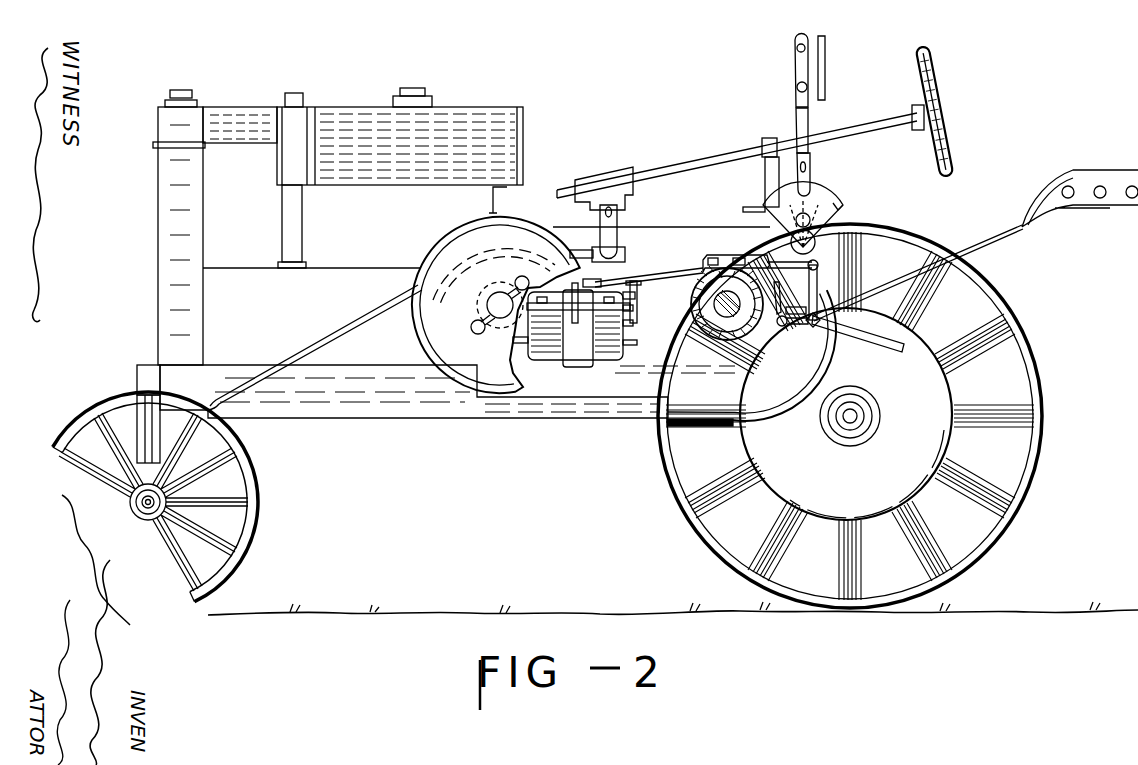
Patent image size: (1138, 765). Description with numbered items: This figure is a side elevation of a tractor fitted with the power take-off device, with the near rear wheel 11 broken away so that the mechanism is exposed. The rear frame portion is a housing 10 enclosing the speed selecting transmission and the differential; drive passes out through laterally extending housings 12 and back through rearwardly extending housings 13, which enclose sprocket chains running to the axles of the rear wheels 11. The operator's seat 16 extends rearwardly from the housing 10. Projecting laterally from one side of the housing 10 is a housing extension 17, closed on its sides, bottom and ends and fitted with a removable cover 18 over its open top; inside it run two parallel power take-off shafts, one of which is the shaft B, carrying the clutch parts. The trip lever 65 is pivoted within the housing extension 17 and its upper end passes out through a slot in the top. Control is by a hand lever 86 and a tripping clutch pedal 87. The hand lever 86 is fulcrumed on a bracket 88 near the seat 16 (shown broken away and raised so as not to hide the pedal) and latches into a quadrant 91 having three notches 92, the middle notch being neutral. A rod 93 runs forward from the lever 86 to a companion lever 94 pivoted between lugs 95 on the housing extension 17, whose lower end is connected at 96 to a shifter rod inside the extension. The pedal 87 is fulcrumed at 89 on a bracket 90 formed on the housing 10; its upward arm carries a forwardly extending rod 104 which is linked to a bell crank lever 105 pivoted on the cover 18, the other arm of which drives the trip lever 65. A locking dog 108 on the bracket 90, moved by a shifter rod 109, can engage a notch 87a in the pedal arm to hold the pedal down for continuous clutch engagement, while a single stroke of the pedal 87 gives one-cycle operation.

The frame housing 10 is at (623, 397).
The rear wheels 11 is at (1025, 488).
The laterally extending housings 12 is at (717, 342).
The rearwardly extending housings 13 is at (846, 414).
The operator's seat 16 is at (1088, 178).
The housing extension 17 is at (548, 360).
The removable cover 18 is at (584, 296).
The trip lever 65 is at (515, 340).
The hand lever 86 is at (793, 50).
The tripping clutch pedal 87 is at (887, 350).
The notch 87a is at (790, 307).
The bracket 88 is at (782, 233).
The pedal fulcrum 89 is at (807, 327).
The bracket 90 is at (792, 323).
The latching quadrant 91 is at (828, 213).
The notches 92 is at (828, 200).
The operating rod 93 is at (645, 280).
The companion lever 94 is at (640, 297).
The lugs 95 is at (633, 308).
The pivotal connection 96 is at (633, 323).
The forwardly extending rod 104 is at (683, 268).
The bell crank lever 105 is at (590, 283).
The locking dog 108 is at (788, 288).
The shifter rod 109 is at (862, 322).
The power take-off shaft B is at (637, 343).